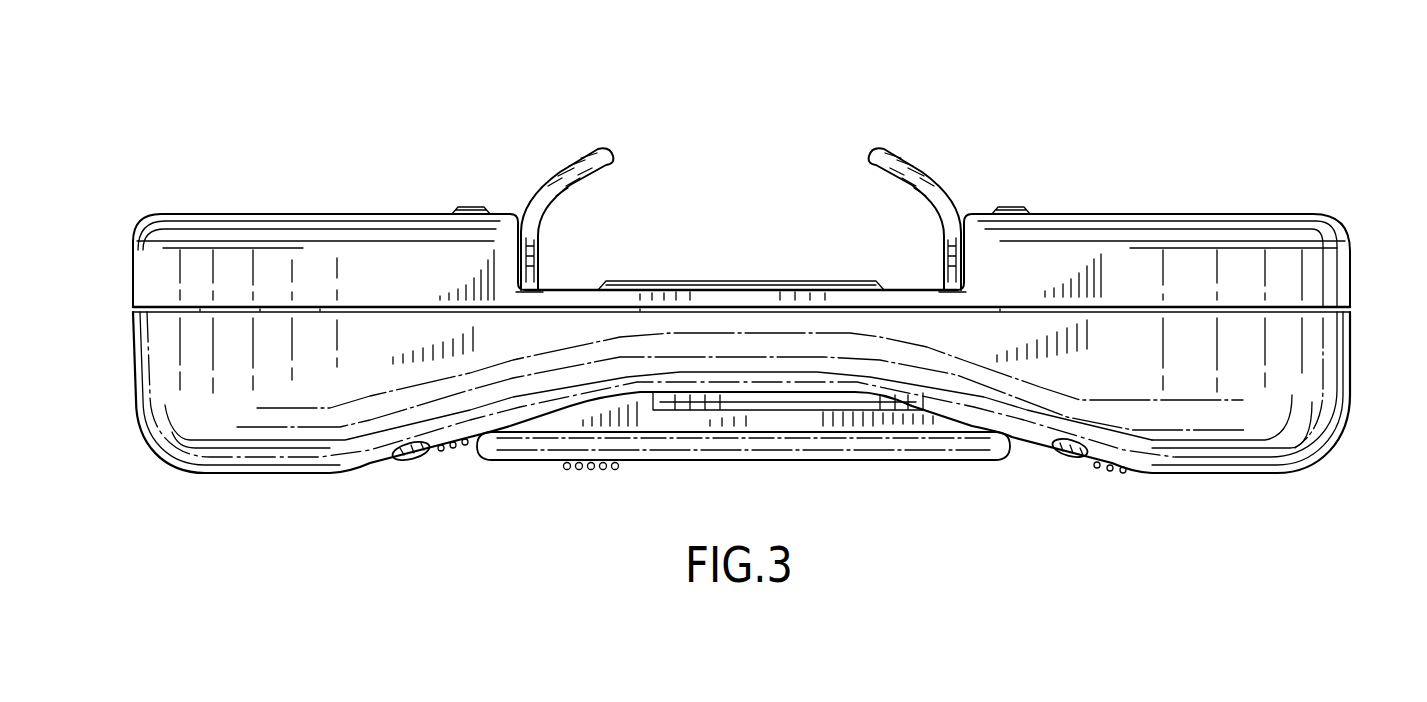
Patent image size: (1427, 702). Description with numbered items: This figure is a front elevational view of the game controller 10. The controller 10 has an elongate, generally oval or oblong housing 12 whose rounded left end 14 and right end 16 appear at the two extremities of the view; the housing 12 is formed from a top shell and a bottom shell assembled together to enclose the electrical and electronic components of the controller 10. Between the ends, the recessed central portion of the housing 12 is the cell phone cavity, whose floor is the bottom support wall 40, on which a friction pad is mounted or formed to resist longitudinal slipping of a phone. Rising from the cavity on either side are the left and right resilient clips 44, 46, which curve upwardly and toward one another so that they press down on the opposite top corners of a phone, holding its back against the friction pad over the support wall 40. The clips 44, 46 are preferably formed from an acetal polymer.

The game controller 10 is at (742, 256).
The housing 12 is at (752, 194).
The left end 14 is at (132, 332).
The right end 16 is at (1352, 353).
The bottom support wall 40 is at (738, 290).
The left resilient clip 44 is at (598, 150).
The right resilient clip 46 is at (886, 150).